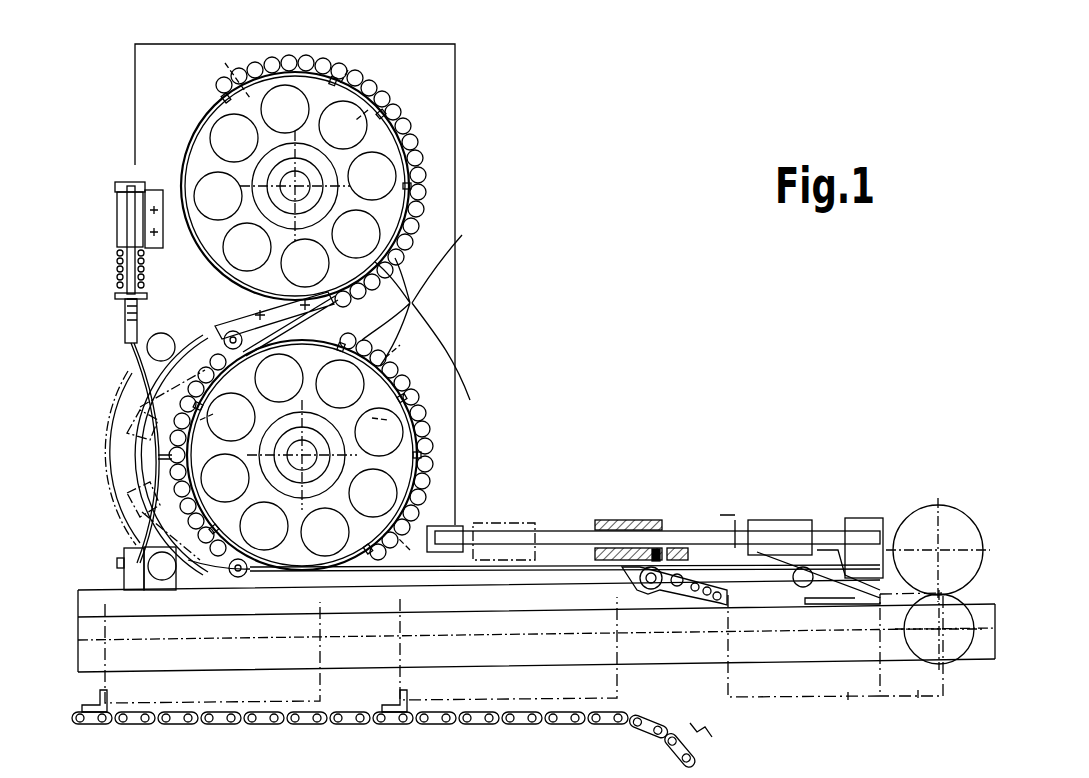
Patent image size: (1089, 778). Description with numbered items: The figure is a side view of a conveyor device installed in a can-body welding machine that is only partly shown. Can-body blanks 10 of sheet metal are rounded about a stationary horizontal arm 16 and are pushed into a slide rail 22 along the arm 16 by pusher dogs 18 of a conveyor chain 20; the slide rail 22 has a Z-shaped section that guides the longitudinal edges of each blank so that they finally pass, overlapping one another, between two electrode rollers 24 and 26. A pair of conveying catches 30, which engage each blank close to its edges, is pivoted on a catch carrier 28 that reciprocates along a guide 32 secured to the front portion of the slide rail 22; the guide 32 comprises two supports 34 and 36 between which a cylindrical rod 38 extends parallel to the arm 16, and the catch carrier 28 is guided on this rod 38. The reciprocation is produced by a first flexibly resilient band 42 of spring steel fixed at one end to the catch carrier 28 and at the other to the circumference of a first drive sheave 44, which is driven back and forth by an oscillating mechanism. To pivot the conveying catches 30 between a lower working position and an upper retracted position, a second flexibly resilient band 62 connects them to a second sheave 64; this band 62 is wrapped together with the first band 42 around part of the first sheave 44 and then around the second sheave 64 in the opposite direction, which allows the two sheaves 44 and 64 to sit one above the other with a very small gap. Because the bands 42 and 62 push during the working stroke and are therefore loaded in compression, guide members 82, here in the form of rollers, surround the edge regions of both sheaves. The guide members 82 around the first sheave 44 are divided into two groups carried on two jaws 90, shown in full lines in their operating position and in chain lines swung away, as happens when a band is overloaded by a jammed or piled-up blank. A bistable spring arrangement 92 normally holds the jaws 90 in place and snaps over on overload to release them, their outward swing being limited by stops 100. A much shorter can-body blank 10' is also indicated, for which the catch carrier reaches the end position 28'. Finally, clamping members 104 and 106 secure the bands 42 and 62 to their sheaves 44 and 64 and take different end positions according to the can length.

The can-body blank 10 is at (493, 666).
The shorter can-body blank 10' is at (911, 666).
The stationary horizontal arm 16 is at (990, 615).
The pusher dog 18 is at (95, 705).
The conveyor chain 20 is at (648, 722).
The slide rail 22 is at (97, 600).
The electrode roller 24 is at (960, 646).
The electrode roller 26 is at (958, 522).
The catch carrier 28 is at (628, 507).
The catch carrier end position 28' is at (814, 528).
The conveying catch 30 is at (712, 566).
The guide 32 is at (724, 526).
The support 34 is at (864, 520).
The support 36 is at (447, 528).
The cylindrical rod 38 is at (737, 528).
The first flexibly resilient band 42 is at (395, 366).
The first drive disc or sheave 44 is at (410, 392).
The second flexibly resilient band 62 is at (400, 237).
The second drive disc or sheave 64 is at (410, 202).
The guide member 82 is at (416, 317).
The jaw 90 is at (216, 340).
The bistable spring arrangement 92 is at (102, 268).
The stop 100 is at (166, 341).
The clamping member 104 is at (343, 352).
The clamping member 106 is at (415, 152).